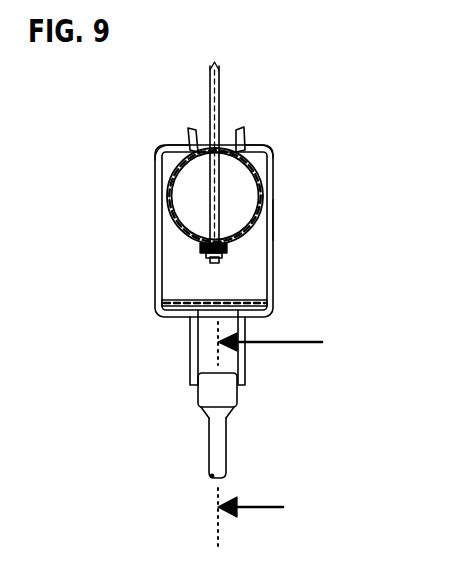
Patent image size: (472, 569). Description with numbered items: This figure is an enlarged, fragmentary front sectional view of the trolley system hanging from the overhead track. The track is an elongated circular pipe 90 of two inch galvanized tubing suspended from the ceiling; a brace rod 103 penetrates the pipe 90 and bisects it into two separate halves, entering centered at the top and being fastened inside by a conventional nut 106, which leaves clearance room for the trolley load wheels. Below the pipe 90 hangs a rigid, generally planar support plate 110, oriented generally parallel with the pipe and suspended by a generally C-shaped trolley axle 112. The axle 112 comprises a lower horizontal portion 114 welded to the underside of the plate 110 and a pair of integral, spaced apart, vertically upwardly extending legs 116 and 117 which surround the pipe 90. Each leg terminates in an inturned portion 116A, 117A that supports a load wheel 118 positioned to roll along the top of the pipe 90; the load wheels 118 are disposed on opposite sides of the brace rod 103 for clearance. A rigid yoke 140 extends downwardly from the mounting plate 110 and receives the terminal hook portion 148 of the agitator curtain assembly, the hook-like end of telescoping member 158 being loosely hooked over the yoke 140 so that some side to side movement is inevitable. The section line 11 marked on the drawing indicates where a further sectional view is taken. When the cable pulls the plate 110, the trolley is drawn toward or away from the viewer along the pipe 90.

The section line 11- 11 is at (281, 434).
The elongated circular pipe 90 is at (226, 258).
The brace rod 103 is at (219, 97).
The nut 106 is at (240, 237).
The support plate 110 is at (177, 301).
The trolley axle 112 is at (275, 205).
The lower horizontal portion 114 is at (173, 318).
The vertically upwardly extending leg 116 is at (157, 218).
The interned portion 116A is at (172, 143).
The vertically upwardly extending leg 117 is at (273, 238).
The interned portion 117A is at (248, 141).
The load wheel 118 is at (190, 127).
The yoke 140 is at (245, 357).
The terminal hook portion 148 is at (222, 395).
The telescoping member 158 is at (208, 447).